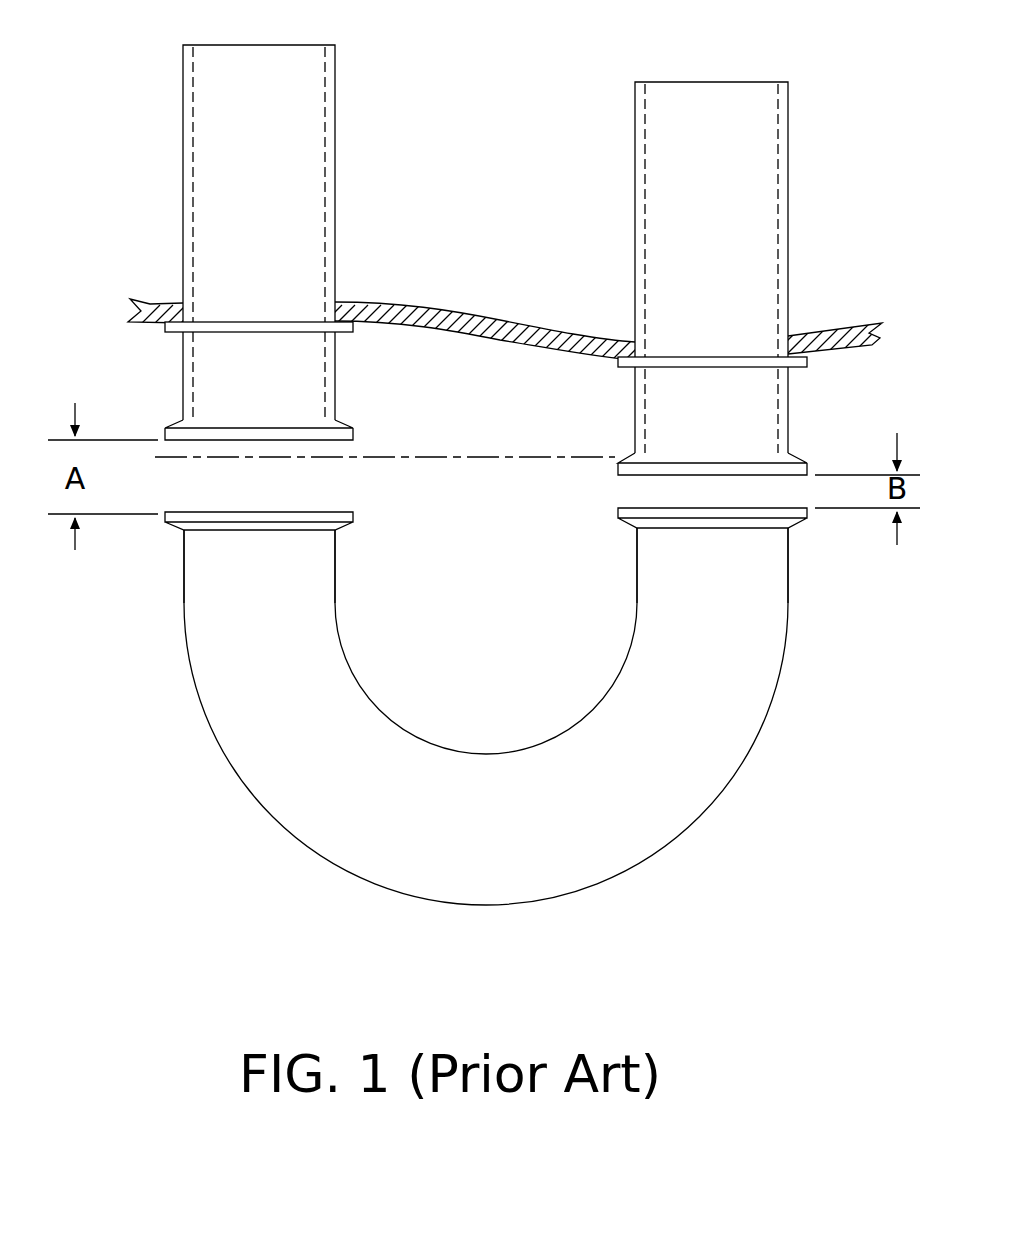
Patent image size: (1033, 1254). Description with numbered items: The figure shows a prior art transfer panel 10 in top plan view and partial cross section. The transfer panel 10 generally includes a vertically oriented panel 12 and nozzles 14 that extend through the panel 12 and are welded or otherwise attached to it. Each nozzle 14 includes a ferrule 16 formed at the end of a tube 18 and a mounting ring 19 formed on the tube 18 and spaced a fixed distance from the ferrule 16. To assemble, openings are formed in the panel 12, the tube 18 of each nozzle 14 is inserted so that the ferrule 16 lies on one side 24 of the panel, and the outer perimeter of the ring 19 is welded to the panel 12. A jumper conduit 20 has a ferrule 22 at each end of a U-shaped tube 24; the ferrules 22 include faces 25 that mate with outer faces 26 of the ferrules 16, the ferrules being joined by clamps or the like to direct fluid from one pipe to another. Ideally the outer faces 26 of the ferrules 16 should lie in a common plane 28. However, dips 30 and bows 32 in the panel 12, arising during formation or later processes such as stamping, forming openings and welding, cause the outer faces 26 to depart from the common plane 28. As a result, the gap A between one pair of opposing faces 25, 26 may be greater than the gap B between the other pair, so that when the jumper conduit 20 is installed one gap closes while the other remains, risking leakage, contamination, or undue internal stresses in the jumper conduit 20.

The transfer panel 10 is at (836, 78).
The panel 12 is at (416, 298).
The nozzle 14 is at (342, 233).
The ferrule 16 is at (219, 426).
The tube 18 is at (215, 228).
The mounting ring 19 is at (176, 333).
The jumper conduit 20 is at (508, 908).
The ferrule 22 is at (221, 526).
The U-shaped tube 24 is at (470, 338).
The face 25 is at (311, 512).
The outer face 26 is at (345, 443).
The common plane 28 is at (458, 433).
The dip 30 is at (357, 300).
The bow 32 is at (629, 350).